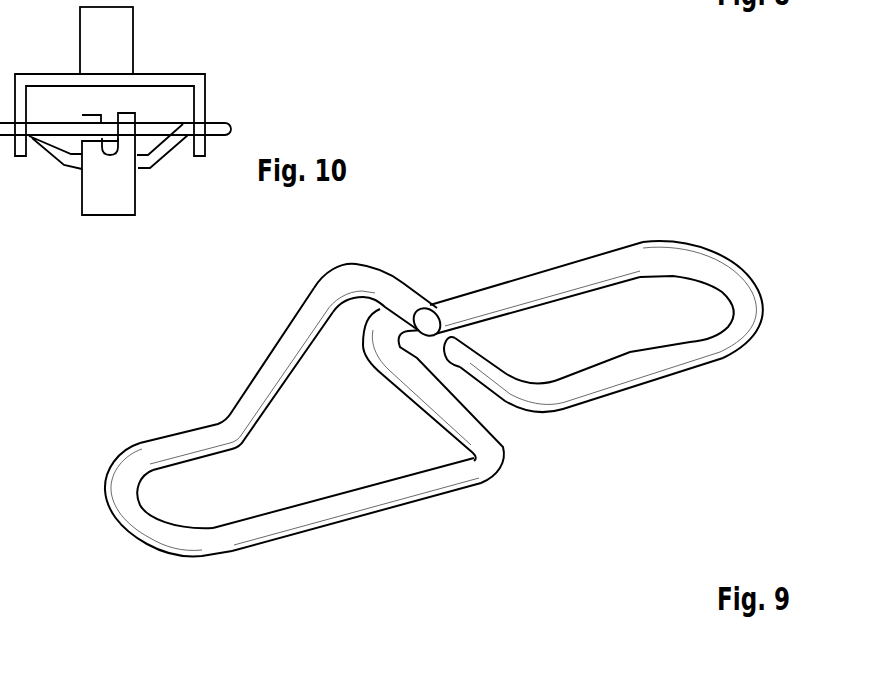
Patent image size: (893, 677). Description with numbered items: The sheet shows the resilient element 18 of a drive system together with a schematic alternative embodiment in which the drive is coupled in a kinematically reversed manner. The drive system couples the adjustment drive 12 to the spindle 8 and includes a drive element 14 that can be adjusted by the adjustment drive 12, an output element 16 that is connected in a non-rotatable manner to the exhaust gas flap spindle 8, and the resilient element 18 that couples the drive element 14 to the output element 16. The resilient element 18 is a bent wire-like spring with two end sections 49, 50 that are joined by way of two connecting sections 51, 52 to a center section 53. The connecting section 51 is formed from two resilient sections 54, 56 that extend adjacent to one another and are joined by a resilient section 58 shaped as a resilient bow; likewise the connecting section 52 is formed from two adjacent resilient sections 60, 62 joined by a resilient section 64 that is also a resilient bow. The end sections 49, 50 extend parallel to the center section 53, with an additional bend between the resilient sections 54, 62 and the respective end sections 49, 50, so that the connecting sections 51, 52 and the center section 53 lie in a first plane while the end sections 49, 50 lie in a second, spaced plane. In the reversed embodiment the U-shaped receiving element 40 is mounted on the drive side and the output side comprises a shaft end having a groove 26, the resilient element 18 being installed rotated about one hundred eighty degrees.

In FIG. 10, the spindle 8 is at (108, 164).
In FIG. 10, the adjustment drive 12 is at (106, 40).
In FIG. 10, the drive element 14 is at (229, 79).
In FIG. 10, the output element 16 is at (168, 168).
In FIG. 10, the resilient element 18 is at (217, 128).
In FIG. 9, the resilient element 18 is at (220, 322).
In FIG. 10, the groove 26 is at (104, 147).
In FIG. 10, the U-shaped receiving element 40 is at (171, 73).
In FIG. 9, the end section 49 is at (402, 295).
In FIG. 9, the end section 50 is at (482, 355).
In FIG. 9, the connecting section 51 is at (135, 562).
In FIG. 9, the connecting section 52 is at (738, 372).
In FIG. 9, the center section 53 is at (425, 395).
In FIG. 9, the resilient section 54 is at (183, 440).
In FIG. 9, the resilient section 56 is at (353, 510).
In FIG. 9, the resilient section 58 is at (117, 490).
In FIG. 9, the resilient section 60 is at (558, 277).
In FIG. 9, the resilient section 62 is at (647, 363).
In FIG. 9, the resilient section 64 is at (740, 280).